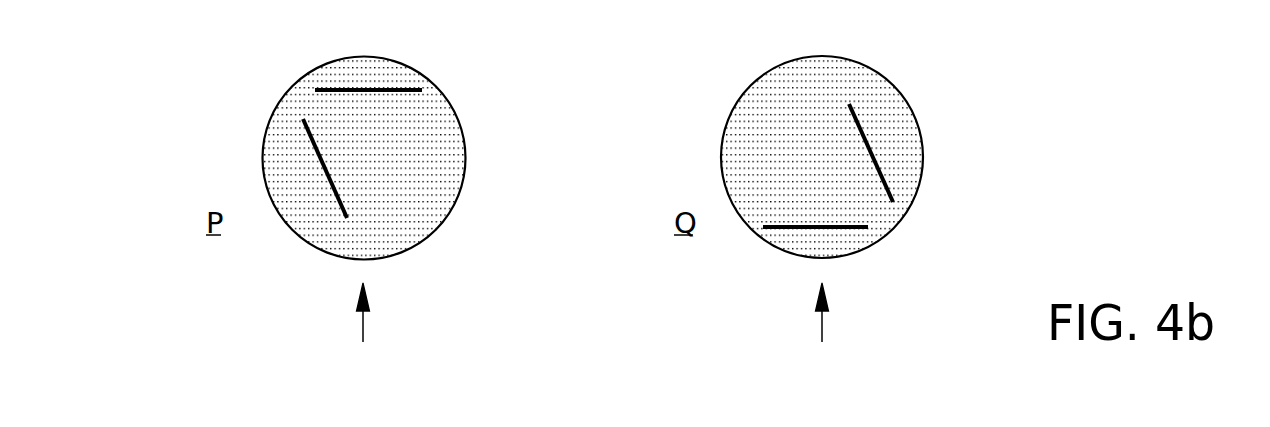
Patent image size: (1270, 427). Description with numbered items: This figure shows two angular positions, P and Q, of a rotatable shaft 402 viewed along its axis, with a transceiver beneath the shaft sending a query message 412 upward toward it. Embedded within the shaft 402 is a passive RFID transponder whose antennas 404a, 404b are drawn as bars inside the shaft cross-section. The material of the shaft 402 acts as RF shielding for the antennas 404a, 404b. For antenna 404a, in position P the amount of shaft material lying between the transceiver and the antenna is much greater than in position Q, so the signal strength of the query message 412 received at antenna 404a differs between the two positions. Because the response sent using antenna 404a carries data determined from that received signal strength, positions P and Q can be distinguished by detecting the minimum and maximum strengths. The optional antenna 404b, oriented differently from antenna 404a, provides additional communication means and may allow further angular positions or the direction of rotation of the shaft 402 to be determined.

The shaft 402 is at (463, 187).
The antenna 404a is at (325, 88).
The antenna 404b is at (308, 137).
The query message 412 is at (363, 323).